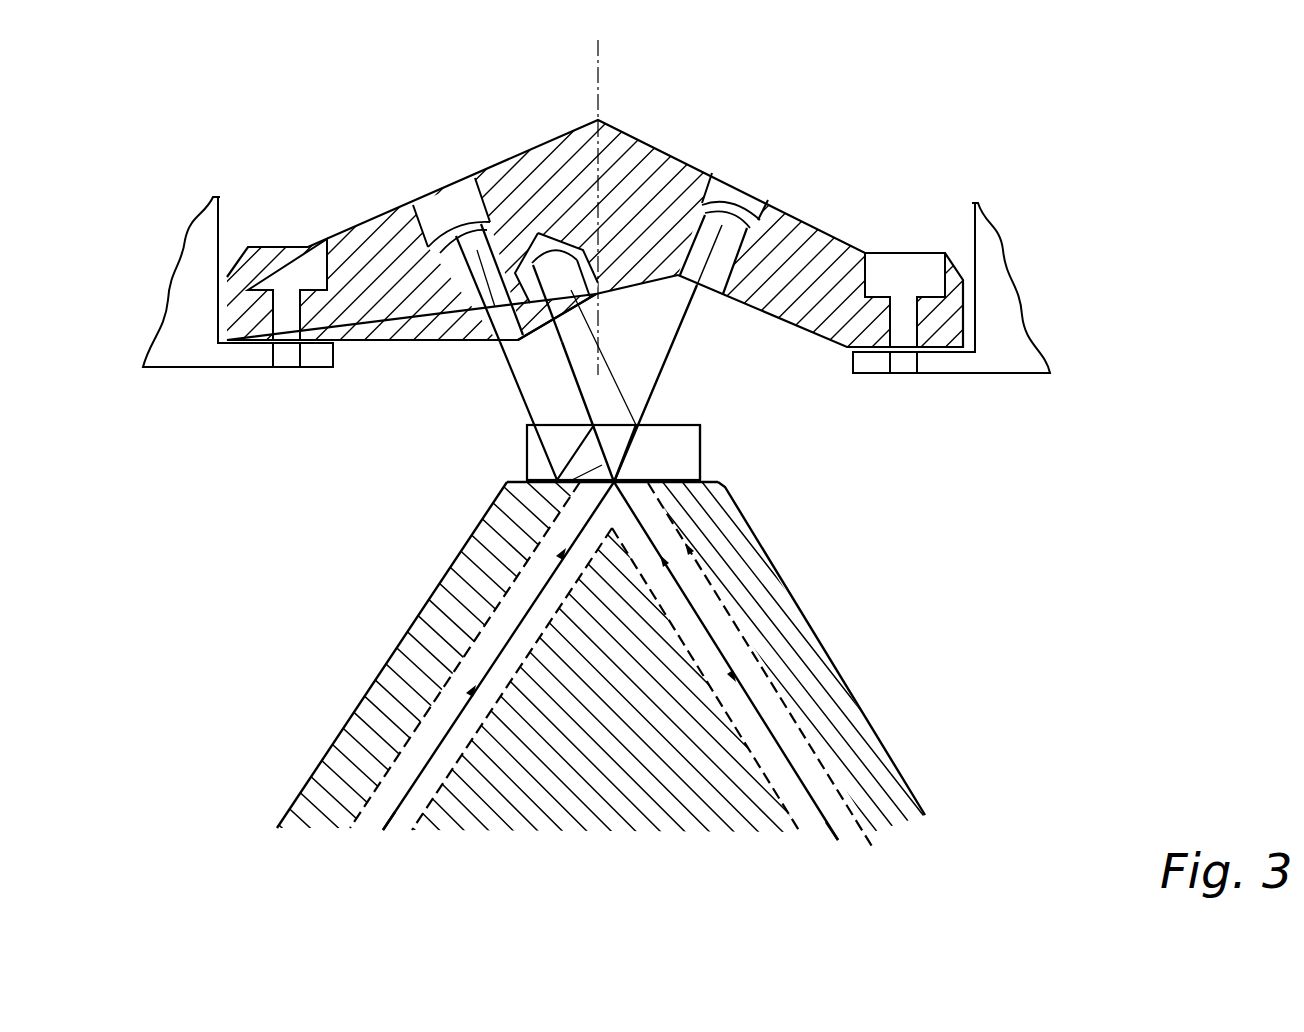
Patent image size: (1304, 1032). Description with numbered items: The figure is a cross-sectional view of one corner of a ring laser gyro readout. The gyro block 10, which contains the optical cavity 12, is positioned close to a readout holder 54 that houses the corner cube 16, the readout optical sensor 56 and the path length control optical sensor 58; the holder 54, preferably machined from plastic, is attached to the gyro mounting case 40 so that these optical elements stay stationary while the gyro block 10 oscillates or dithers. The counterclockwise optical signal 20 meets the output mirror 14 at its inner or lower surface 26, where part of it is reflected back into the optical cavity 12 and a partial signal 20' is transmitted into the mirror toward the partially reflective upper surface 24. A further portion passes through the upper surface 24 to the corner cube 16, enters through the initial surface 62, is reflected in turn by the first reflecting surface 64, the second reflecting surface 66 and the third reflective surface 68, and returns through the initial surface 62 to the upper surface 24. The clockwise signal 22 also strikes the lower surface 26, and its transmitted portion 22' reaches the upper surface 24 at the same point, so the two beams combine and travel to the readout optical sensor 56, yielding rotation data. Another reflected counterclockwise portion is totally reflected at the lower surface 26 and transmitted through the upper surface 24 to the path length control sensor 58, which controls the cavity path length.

The gyro block 10 is at (798, 606).
The optical cavity 12 is at (388, 835).
The output mirror 14 is at (702, 445).
The corner cube 16 is at (612, 300).
The CCW optical signal 20 is at (700, 591).
The partial CCW optical signal 20' is at (516, 467).
The CW signal 22 is at (540, 557).
The portional CW signal 22' is at (662, 427).
The output mirror upper surface 24 is at (700, 428).
The output mirror lower surface 26 is at (700, 493).
The gyro mounting case 40 is at (183, 297).
The readout holder 54 is at (843, 242).
The readout optical sensor 56 is at (740, 180).
The PLC optical sensor 58 is at (416, 205).
The corner cube initial surface 62 is at (520, 333).
The first reflecting surface 64 is at (523, 240).
The second reflecting surface 66 is at (540, 233).
The third reflective surface 68 is at (570, 237).